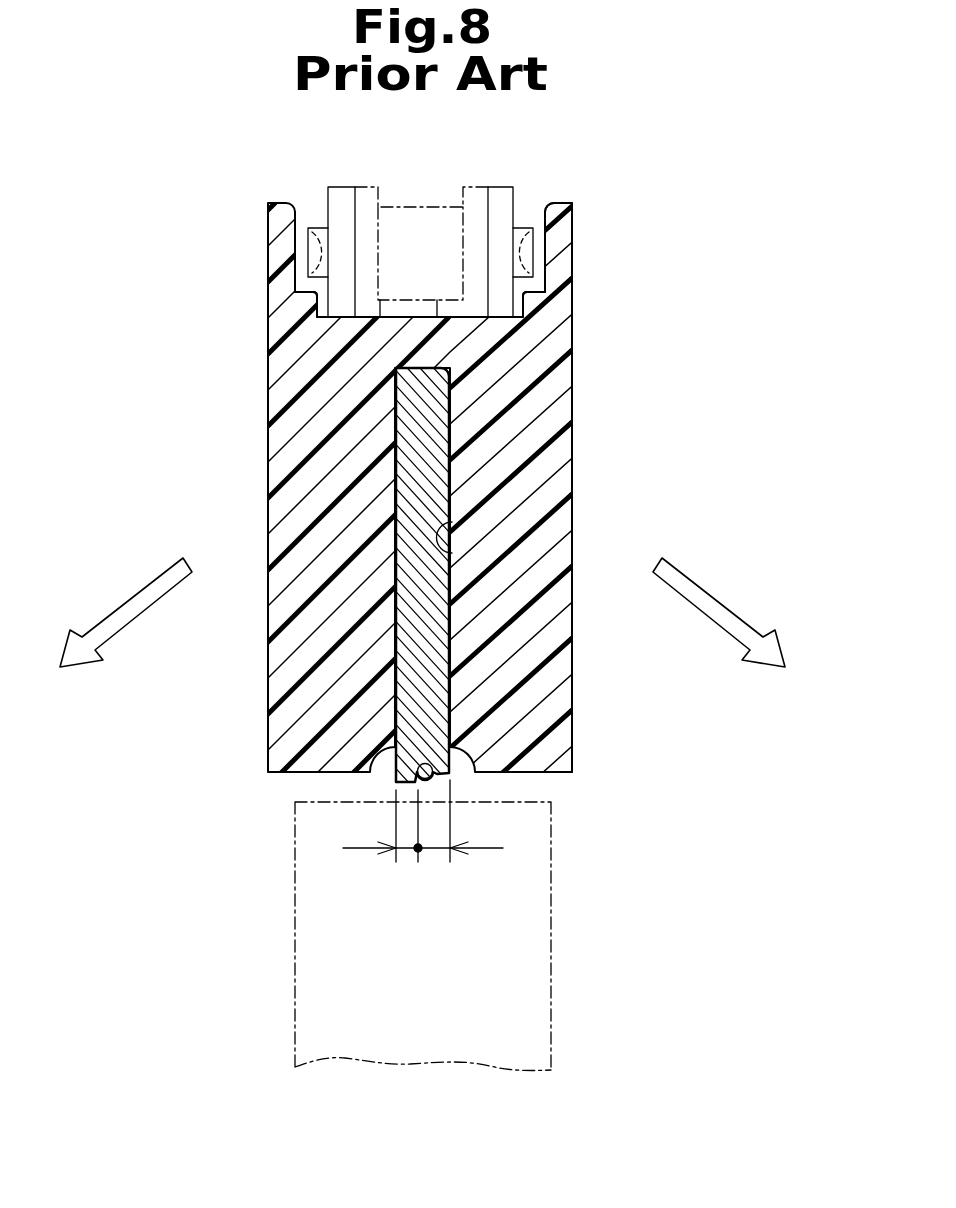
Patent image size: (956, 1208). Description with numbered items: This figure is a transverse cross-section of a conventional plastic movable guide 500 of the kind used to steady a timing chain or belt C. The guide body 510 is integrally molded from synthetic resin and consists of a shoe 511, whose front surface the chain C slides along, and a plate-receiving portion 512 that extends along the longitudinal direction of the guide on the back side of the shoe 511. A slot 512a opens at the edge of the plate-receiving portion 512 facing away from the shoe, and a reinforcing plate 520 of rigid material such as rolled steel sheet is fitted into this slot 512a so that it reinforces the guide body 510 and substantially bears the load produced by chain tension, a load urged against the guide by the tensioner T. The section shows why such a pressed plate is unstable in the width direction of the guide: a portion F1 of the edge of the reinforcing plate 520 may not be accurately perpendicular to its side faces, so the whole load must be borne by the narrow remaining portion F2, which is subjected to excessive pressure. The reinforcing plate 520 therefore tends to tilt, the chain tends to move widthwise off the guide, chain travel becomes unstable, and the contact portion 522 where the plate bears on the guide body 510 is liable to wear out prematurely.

The movable guide 500 is at (247, 303).
The guide body 510 is at (723, 215).
The shoe 511 is at (435, 300).
The plate-receiving portion 512 is at (555, 410).
The slot 512a is at (452, 522).
The reinforcing plate 520 is at (413, 478).
The contact portion 522 is at (440, 776).
The chain or belt C is at (440, 257).
The tensioner T is at (409, 1018).
The edge portion of the reinforcing plate F1 is at (440, 850).
The remaining edge portion F2 is at (405, 850).